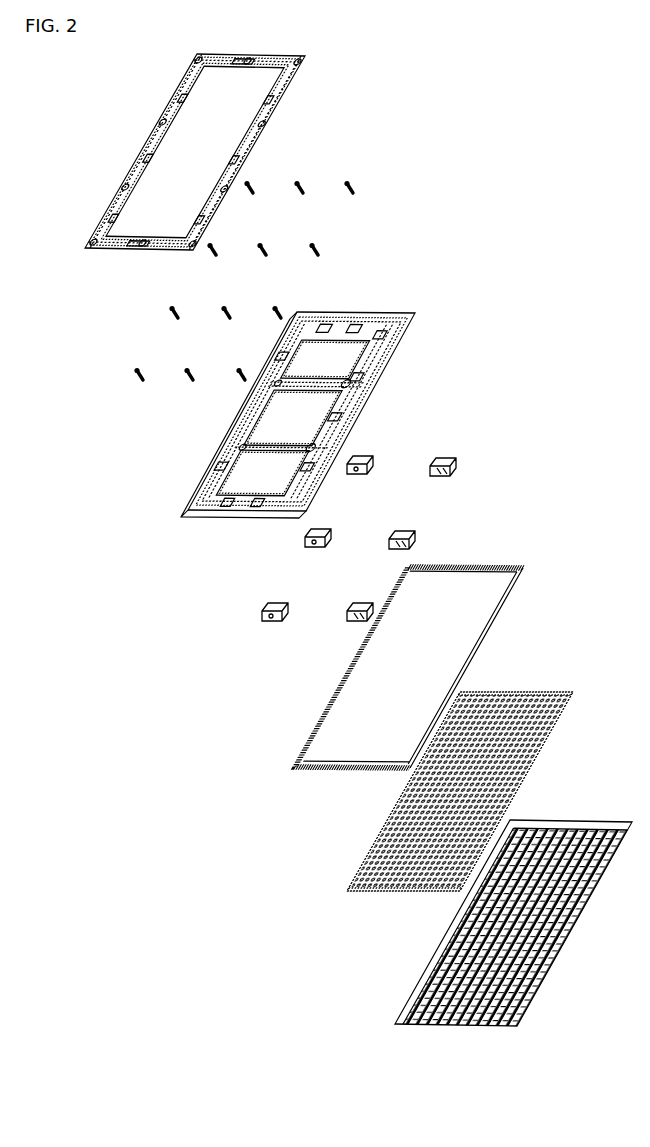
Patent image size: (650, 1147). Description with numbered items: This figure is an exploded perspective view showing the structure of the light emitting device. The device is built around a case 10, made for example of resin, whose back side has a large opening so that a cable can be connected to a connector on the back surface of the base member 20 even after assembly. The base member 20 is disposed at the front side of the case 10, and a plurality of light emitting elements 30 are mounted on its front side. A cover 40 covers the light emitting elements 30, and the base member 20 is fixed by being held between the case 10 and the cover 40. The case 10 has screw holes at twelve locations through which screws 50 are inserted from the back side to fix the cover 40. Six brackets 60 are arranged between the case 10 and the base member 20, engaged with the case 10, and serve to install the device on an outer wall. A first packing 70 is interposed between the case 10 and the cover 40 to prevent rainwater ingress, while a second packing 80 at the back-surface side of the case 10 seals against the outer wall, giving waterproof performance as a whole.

The case 10 is at (372, 312).
The base member 20 is at (498, 771).
The light emitting elements 30 is at (489, 691).
The cover 40 is at (575, 820).
The screws 50 is at (188, 380).
The brackets 60 is at (441, 456).
The first packing 70 is at (488, 566).
The second packing 80 is at (113, 256).